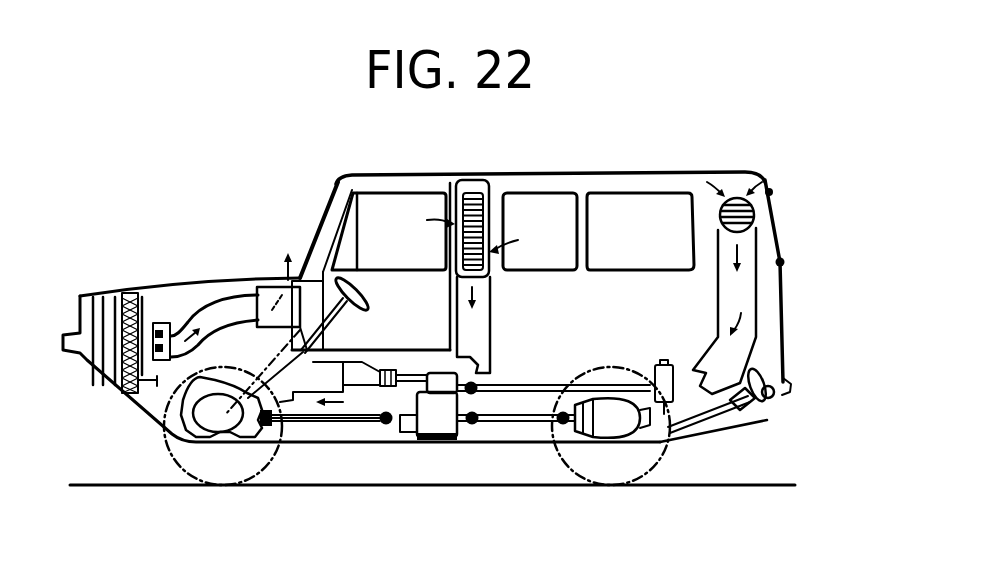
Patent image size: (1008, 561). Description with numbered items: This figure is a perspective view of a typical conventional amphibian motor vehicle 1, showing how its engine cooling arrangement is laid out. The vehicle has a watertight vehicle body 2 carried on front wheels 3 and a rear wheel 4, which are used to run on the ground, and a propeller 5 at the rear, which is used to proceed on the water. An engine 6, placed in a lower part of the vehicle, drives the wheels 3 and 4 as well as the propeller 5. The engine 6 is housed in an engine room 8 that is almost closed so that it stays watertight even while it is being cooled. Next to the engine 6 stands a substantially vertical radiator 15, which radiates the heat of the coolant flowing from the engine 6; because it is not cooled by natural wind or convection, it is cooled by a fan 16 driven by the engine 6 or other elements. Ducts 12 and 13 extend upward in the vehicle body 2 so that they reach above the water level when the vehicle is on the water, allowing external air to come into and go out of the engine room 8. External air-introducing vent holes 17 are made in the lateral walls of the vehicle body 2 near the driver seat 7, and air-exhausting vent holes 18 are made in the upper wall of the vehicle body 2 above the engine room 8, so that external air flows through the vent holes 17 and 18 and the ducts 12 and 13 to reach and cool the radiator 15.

The amphibian motor vehicle 1 is at (695, 157).
The vehicle body 2 is at (266, 283).
The front wheels 3 is at (163, 446).
The rear wheel 4 is at (665, 455).
The propeller 5 is at (768, 400).
The engine 6 is at (252, 363).
The driver seat 7 is at (336, 184).
The engine room 8 is at (355, 397).
The duct 12 is at (208, 286).
The duct 13 is at (492, 346).
The radiator 15 is at (133, 294).
The fan 16 is at (160, 322).
The external air-introducing vent holes 17 is at (483, 172).
The air-exhausting vent holes 18 is at (262, 284).